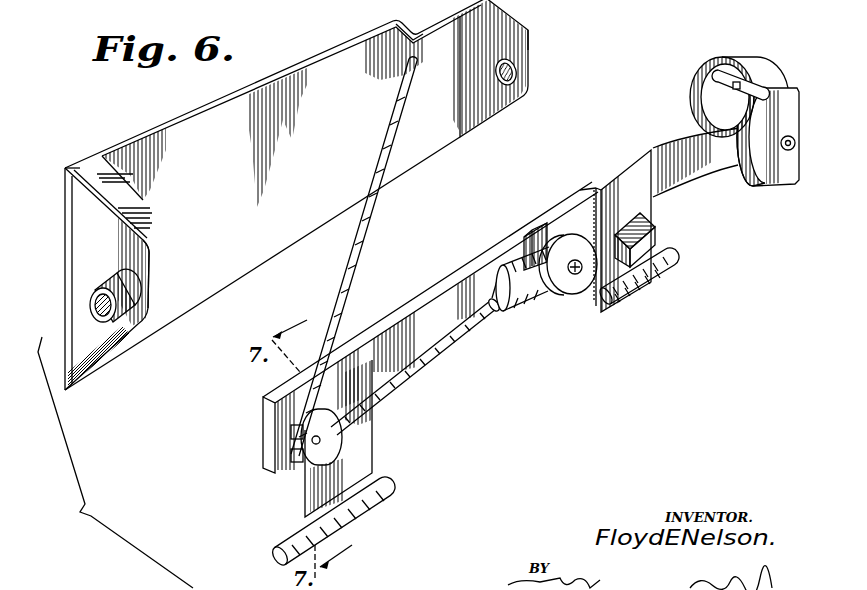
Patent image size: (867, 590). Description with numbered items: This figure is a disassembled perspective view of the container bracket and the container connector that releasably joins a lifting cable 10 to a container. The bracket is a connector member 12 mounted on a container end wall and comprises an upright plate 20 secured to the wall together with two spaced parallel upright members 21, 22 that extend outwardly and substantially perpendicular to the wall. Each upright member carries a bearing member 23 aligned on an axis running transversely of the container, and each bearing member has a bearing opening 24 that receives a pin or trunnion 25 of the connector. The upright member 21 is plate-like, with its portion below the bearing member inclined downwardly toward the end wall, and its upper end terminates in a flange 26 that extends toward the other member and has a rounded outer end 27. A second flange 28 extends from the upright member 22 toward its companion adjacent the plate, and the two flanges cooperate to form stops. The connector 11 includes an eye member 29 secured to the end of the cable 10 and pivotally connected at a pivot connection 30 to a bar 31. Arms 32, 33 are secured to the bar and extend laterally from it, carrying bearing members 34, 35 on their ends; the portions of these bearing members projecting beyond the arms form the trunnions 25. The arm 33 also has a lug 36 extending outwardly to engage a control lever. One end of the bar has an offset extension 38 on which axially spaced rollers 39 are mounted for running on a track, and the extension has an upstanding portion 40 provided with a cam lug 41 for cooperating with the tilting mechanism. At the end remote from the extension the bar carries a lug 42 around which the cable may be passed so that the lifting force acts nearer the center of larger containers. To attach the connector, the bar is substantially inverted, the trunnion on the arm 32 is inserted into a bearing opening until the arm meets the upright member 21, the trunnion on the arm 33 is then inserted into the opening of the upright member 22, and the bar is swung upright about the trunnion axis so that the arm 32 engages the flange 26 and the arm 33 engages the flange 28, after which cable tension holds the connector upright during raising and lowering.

The cable 10 is at (362, 248).
The connector 11 is at (590, 183).
The connector member 12 is at (65, 168).
The upright plate 20 is at (190, 300).
The upright member 21 is at (148, 263).
The upright member 22 is at (525, 33).
The bearing member 23 is at (529, 71).
The bearing opening 24 is at (107, 322).
The trunnion 25 is at (283, 543).
The flange 26 is at (145, 196).
The rounded outer end 27 is at (158, 222).
The flange 28 is at (431, 22).
The eye member 29 is at (498, 314).
The pivot connection 30 is at (557, 238).
The bar 31 is at (461, 270).
The arm 32 is at (362, 442).
The arm 33 is at (653, 210).
The bearing member 34 is at (371, 505).
The bearing member 35 is at (632, 294).
The lug 36 is at (658, 240).
The offset extension 38 is at (702, 173).
The roller 39 is at (778, 90).
The upstanding portion 40 is at (723, 112).
The cam lug 41 is at (722, 75).
The lug 42 is at (312, 442).